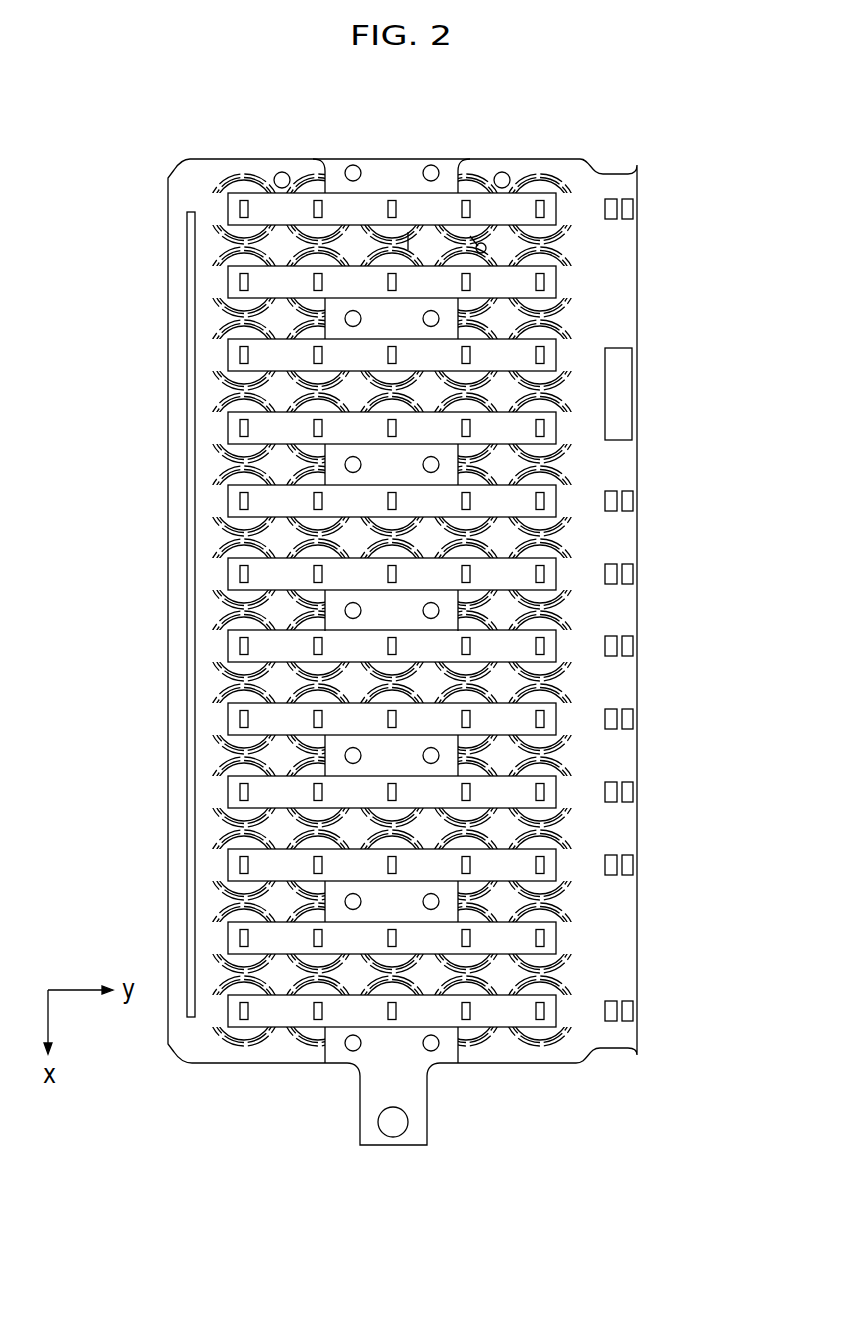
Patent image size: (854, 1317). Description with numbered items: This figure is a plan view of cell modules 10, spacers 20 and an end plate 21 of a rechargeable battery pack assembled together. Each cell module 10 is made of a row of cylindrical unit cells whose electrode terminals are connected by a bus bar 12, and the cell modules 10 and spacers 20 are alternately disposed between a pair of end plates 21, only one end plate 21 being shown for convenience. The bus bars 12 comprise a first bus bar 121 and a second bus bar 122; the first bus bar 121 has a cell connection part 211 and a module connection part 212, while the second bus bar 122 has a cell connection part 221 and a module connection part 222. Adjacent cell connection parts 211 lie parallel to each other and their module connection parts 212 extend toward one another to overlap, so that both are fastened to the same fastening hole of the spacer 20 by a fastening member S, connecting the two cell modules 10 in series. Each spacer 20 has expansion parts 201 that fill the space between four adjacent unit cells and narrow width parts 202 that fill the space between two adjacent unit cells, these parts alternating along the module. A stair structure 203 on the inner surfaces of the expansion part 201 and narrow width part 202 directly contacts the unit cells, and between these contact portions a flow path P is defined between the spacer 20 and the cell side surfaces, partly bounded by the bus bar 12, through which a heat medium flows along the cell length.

The cell module 10 is at (431, 627).
The bus bar 12 is at (431, 610).
The spacer 20 is at (479, 609).
The end plate 21 is at (210, 159).
The first bus bar 121 is at (431, 574).
The second bus bar 122 is at (491, 646).
The expansion part 201 is at (497, 245).
The narrow width part 202 is at (466, 240).
The stair structure 203 is at (478, 258).
The cell connection part 211 is at (550, 942).
The module connection part 212 is at (338, 890).
The cell connection part 221 is at (491, 792).
The module connection part 222 is at (715, 552).
The fastening member S is at (350, 752).
The flow path P is at (236, 980).